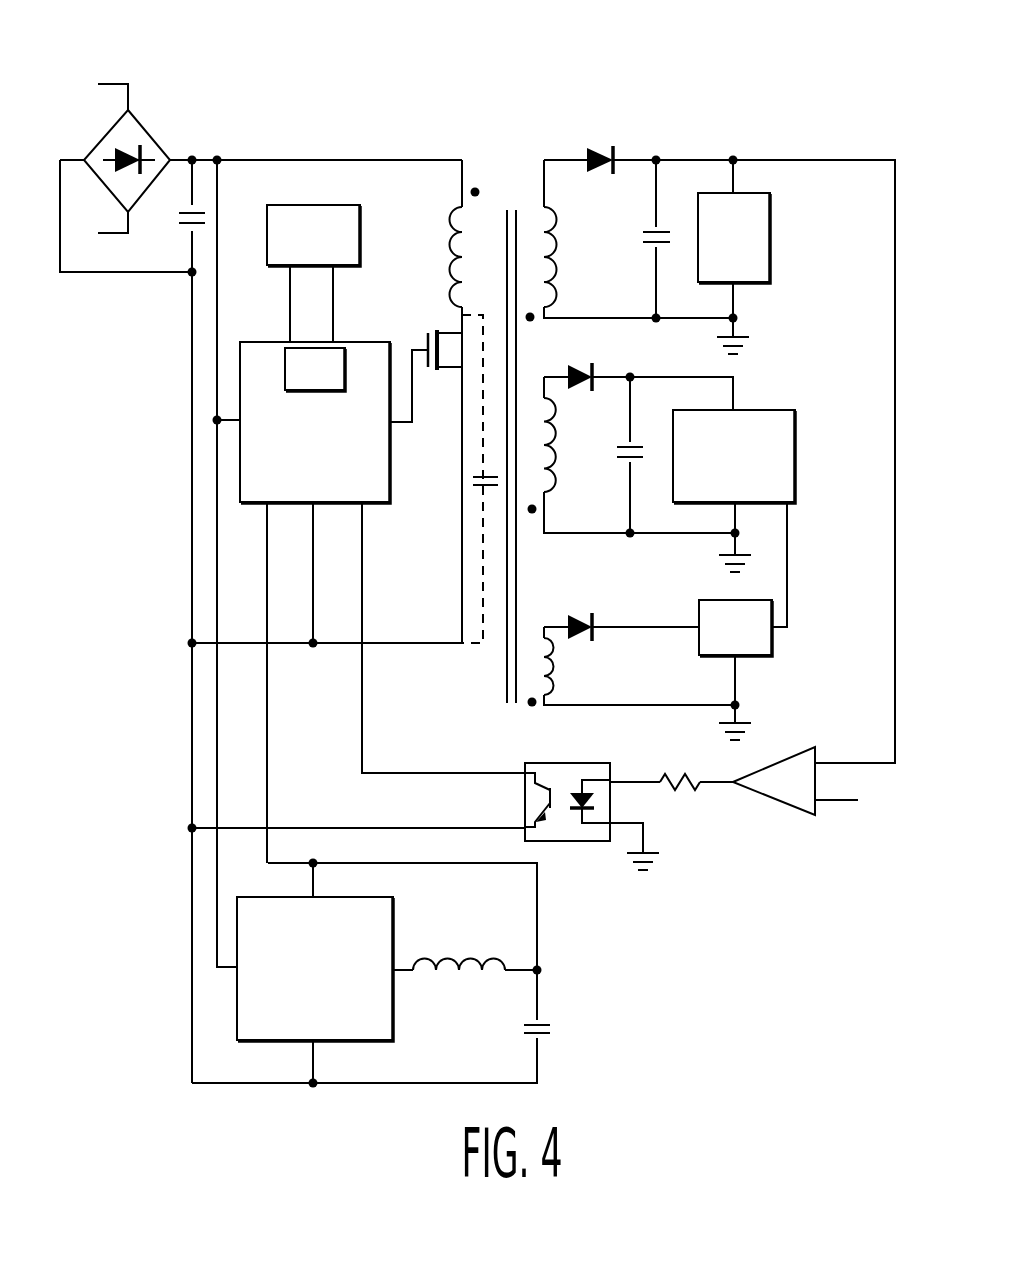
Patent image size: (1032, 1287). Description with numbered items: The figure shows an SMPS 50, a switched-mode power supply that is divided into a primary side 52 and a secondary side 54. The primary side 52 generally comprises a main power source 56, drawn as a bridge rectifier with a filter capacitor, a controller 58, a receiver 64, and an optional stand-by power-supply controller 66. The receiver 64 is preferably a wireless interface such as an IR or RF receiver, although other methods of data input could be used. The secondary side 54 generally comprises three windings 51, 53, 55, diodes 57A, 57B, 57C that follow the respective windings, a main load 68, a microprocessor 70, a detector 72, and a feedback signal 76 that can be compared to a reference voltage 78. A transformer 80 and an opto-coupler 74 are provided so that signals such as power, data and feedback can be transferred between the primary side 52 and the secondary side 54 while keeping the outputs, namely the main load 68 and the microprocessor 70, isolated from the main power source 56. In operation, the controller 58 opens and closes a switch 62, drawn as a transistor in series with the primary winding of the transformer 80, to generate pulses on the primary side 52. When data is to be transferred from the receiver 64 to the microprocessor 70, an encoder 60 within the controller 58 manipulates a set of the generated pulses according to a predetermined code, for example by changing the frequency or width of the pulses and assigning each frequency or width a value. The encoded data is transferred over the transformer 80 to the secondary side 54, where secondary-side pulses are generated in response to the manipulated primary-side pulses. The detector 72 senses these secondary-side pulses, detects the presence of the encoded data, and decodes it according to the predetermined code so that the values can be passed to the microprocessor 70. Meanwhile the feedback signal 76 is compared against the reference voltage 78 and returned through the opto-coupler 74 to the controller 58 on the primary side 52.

The SMPS 50 is at (468, 100).
The winding 51 is at (556, 267).
The primary side 52 is at (315, 150).
The winding 53 is at (556, 457).
The secondary side 54 is at (705, 128).
The winding 55 is at (556, 675).
The main power source 56 is at (160, 114).
The diode 57A is at (614, 147).
The diode 57B is at (594, 370).
The diode 57C is at (594, 620).
The controller 58 is at (325, 425).
The encoder 60 is at (285, 368).
The switch 62 is at (425, 336).
The receiver 64 is at (360, 228).
The optional stand-by power-supply controller 66 is at (396, 1025).
The main load 68 is at (771, 228).
The microprocessor 70 is at (763, 408).
The detector 72 is at (726, 641).
The opto-coupler 74 is at (578, 842).
The feedback signal 76 is at (897, 190).
The reference voltage 78 is at (887, 815).
The transformer 80 is at (510, 186).